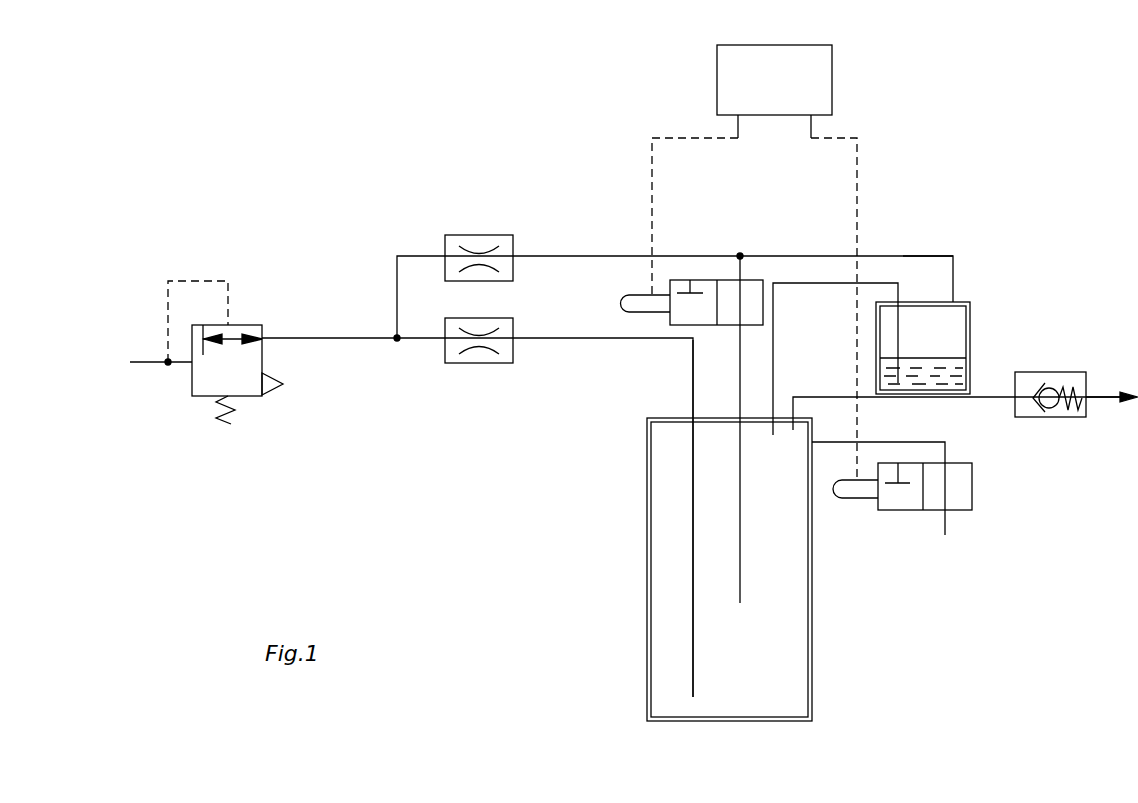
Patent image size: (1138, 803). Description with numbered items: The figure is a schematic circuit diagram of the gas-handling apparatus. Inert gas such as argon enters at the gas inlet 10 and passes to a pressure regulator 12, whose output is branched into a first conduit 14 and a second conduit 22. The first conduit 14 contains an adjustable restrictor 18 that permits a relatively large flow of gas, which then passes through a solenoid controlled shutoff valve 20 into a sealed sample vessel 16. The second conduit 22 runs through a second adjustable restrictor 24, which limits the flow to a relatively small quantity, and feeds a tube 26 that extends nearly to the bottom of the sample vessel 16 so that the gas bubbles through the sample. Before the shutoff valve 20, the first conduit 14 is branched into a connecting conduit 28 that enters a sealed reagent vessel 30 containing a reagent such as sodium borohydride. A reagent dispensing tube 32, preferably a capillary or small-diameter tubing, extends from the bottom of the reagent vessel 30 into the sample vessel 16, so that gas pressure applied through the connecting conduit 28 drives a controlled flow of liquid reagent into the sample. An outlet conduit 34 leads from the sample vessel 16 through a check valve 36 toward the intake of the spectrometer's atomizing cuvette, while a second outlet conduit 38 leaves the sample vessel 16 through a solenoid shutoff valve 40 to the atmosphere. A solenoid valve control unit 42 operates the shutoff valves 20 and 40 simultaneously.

The gas inlet 10 is at (145, 362).
The pressure regulator 12 is at (240, 330).
The first conduit 14 is at (585, 257).
The sealed sample vessel 16 is at (647, 540).
The adjustable restrictor 18 is at (477, 237).
The solenoid controlled shutoff valve 20 is at (748, 278).
The second conduit 22 is at (560, 336).
The second adjustable restrictor 24 is at (505, 322).
The tube 26 is at (695, 651).
The connecting conduit 28 is at (903, 256).
The sealed reagent vessel 30 is at (923, 348).
The reagent dispensing tube 32 is at (897, 283).
The outlet conduit 34 is at (803, 397).
The check valve 36 is at (1040, 372).
The second outlet conduit 38 is at (877, 442).
The solenoid shutoff valve 40 is at (972, 492).
The solenoid valve control unit 42 is at (825, 89).